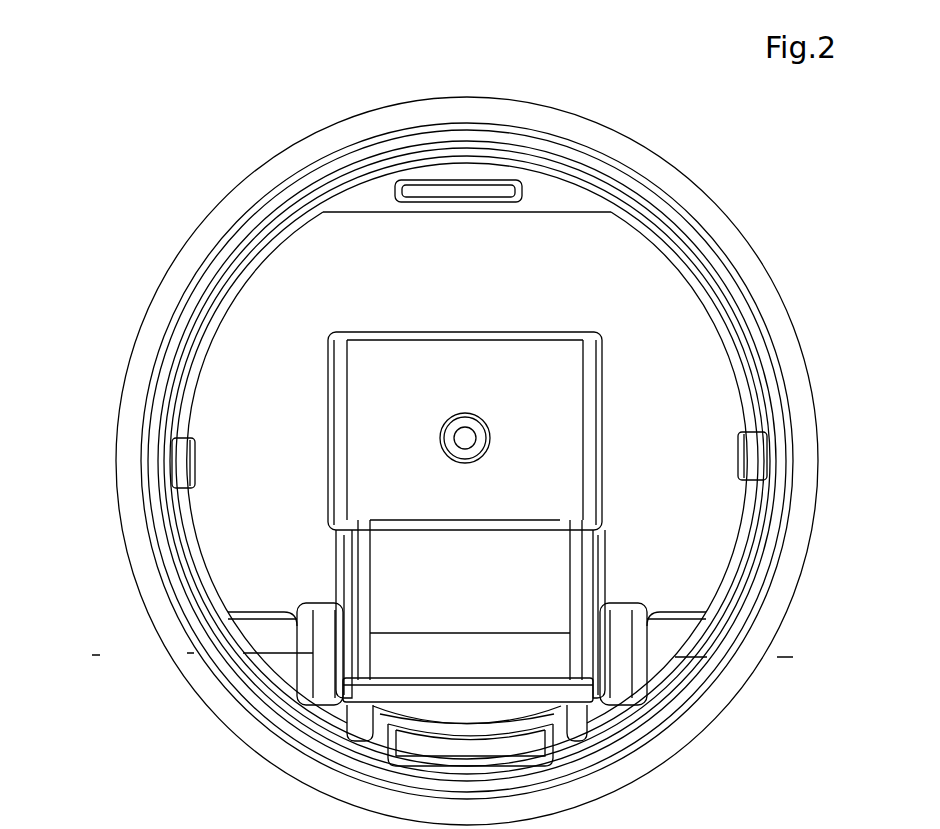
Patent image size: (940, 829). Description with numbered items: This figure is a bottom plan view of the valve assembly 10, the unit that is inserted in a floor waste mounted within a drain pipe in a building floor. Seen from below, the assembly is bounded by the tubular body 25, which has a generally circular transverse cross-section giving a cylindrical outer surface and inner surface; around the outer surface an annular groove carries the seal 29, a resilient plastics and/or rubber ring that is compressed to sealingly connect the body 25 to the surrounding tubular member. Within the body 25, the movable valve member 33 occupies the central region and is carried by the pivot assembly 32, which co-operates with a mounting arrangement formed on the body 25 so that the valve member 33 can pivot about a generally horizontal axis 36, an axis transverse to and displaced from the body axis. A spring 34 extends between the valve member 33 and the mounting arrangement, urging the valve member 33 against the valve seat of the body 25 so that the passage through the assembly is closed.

The valve assembly 10 is at (807, 198).
The tubular body 25 is at (745, 357).
The seal 29 is at (800, 568).
The pivot assembly 32 is at (445, 635).
The movable valve member 33 is at (506, 285).
The spring 34 is at (327, 398).
The horizontal axis 36 is at (817, 658).